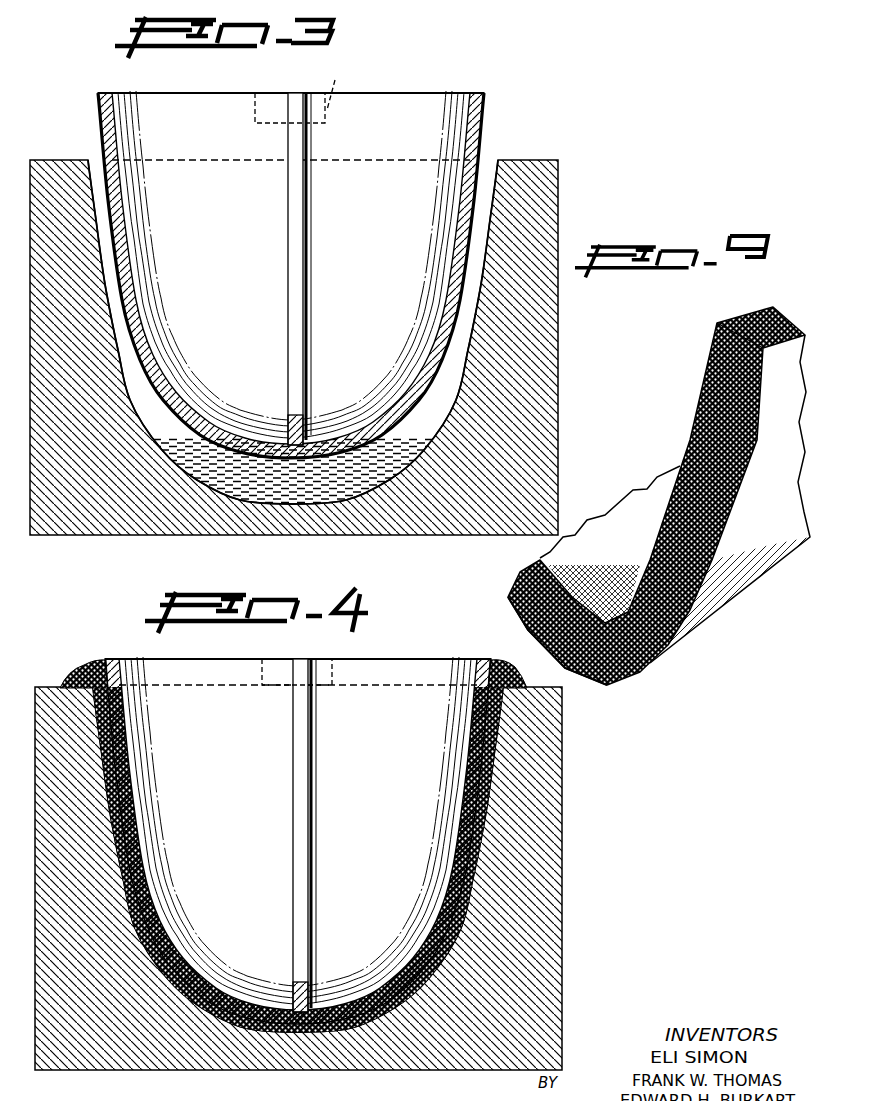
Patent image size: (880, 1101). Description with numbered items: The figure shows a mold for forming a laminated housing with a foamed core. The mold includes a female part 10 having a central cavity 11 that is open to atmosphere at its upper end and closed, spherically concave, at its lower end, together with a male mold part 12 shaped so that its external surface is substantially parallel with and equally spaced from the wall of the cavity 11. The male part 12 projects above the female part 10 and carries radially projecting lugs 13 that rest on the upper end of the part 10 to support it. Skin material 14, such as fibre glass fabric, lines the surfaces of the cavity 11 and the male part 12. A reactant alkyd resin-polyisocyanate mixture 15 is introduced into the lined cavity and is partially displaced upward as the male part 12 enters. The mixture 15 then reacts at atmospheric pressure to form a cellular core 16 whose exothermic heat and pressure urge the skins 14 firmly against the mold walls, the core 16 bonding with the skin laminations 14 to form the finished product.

In FIG. 3, the female mold part 10 is at (558, 326).
In FIG. 4, the female mold part 10 is at (555, 924).
In FIG. 3, the central cavity 11 is at (475, 358).
In FIG. 4, the central cavity 11 is at (490, 870).
In FIG. 3, the male mold part 12 is at (486, 129).
In FIG. 4, the male mold part 12 is at (477, 723).
In FIG. 3, the lugs 13 is at (300, 252).
In FIG. 4, the lugs 13 is at (297, 835).
In FIG. 3, the skin material 14 is at (475, 273).
In FIG. 4, the skin material 14 is at (478, 836).
In FIG. 9, the skin material 14 is at (692, 422).
In FIG. 3, the reactant alkyd resin-polyisocyanate mixture 15 is at (238, 482).
In FIG. 4, the cellular core 16 is at (500, 784).
In FIG. 9, the cellular core 16 is at (645, 672).